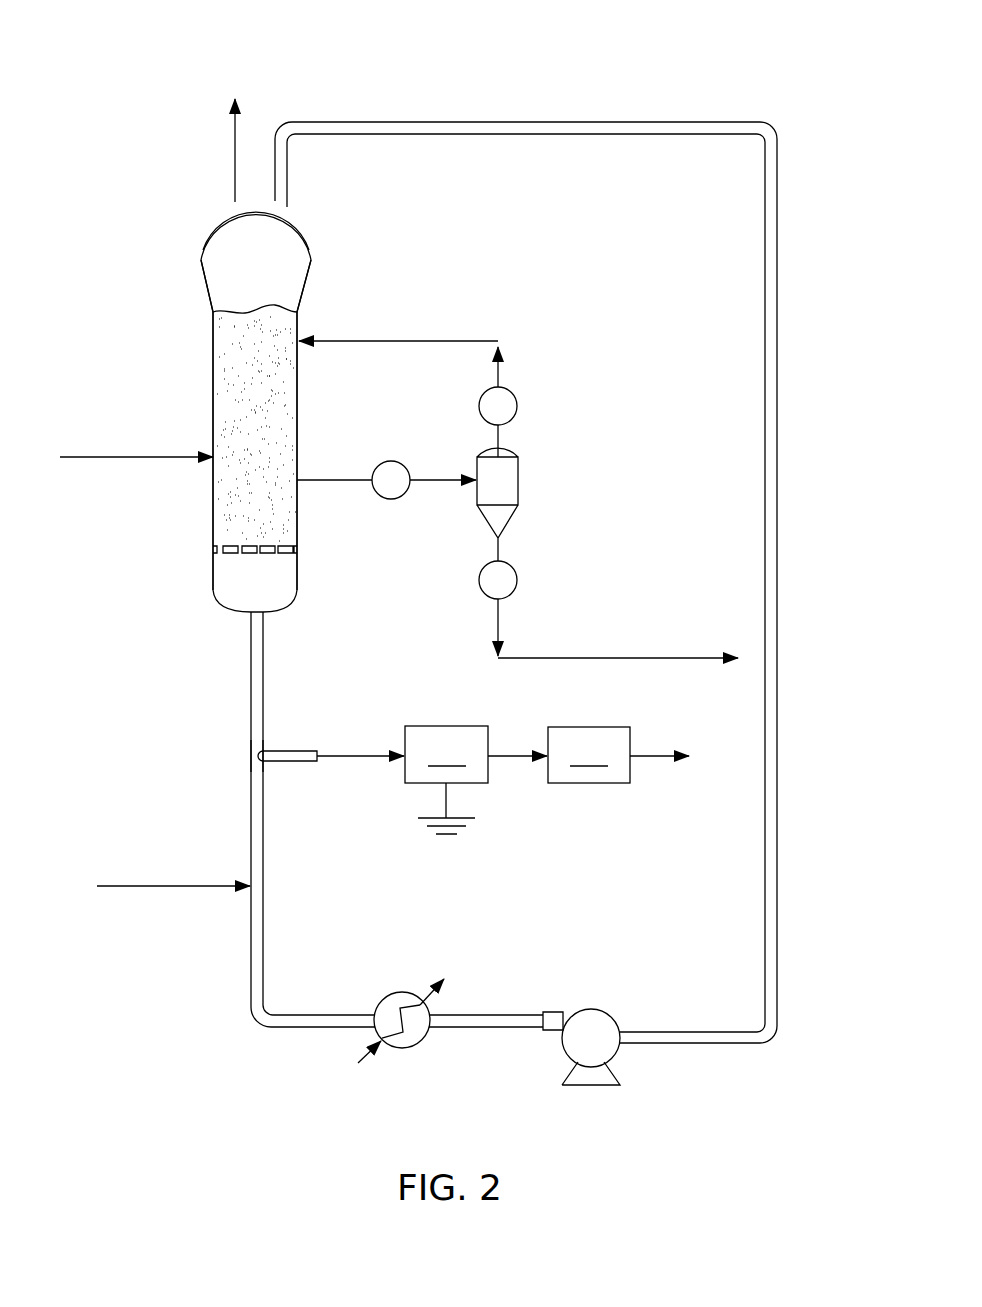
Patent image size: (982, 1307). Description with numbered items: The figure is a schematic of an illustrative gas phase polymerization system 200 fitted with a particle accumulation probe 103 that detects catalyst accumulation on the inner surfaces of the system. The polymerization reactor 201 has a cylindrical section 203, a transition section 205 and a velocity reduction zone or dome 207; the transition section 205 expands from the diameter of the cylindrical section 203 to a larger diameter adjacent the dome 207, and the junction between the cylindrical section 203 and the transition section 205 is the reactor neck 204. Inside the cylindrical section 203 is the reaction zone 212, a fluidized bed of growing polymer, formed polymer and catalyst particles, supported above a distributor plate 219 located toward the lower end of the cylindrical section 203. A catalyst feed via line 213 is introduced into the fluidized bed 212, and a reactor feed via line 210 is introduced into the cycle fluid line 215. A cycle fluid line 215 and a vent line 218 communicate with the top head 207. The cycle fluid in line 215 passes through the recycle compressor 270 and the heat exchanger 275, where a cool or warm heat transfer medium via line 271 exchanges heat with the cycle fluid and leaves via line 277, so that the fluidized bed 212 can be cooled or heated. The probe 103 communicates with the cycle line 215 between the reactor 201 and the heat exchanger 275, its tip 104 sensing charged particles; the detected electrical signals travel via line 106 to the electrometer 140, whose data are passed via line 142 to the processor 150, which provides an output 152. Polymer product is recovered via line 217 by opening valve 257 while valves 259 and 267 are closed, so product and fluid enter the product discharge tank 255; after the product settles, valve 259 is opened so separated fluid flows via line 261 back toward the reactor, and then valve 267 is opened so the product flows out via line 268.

The gas phase polymerization system 200 is at (138, 58).
The polymerization reactor 201 is at (198, 250).
The cylindrical section 203 is at (297, 373).
The reactor neck 204 is at (217, 312).
The transition section 205 is at (303, 283).
The velocity reduction zone or dome 207 is at (300, 217).
The reaction zone 212 is at (246, 500).
The catalyst feed line 213 is at (172, 453).
The cycle fluid line 215 is at (534, 121).
The polymer product line 217 is at (334, 478).
The vent line 218 is at (232, 158).
The distributor plate 219 is at (245, 553).
The product discharge tank 255 is at (522, 480).
The valve 257 is at (400, 463).
The valve 259 is at (512, 392).
The fluid return line 261 is at (465, 337).
The valve 267 is at (480, 572).
The polymer product line 268 is at (607, 656).
The particle accumulation probe 103 is at (302, 763).
The tip 104 is at (255, 753).
The signal line 106 is at (360, 754).
The electrometer 140 is at (446, 780).
The data line 142 is at (512, 754).
The processor 150 is at (589, 755).
The control output 152 is at (655, 754).
The reactor feed line 210 is at (173, 885).
The recycle compressor 270 is at (596, 1087).
The heat transfer medium inlet line 271 is at (358, 1063).
The heat exchanger 275 is at (415, 1043).
The heated heat transfer medium line 277 is at (422, 992).